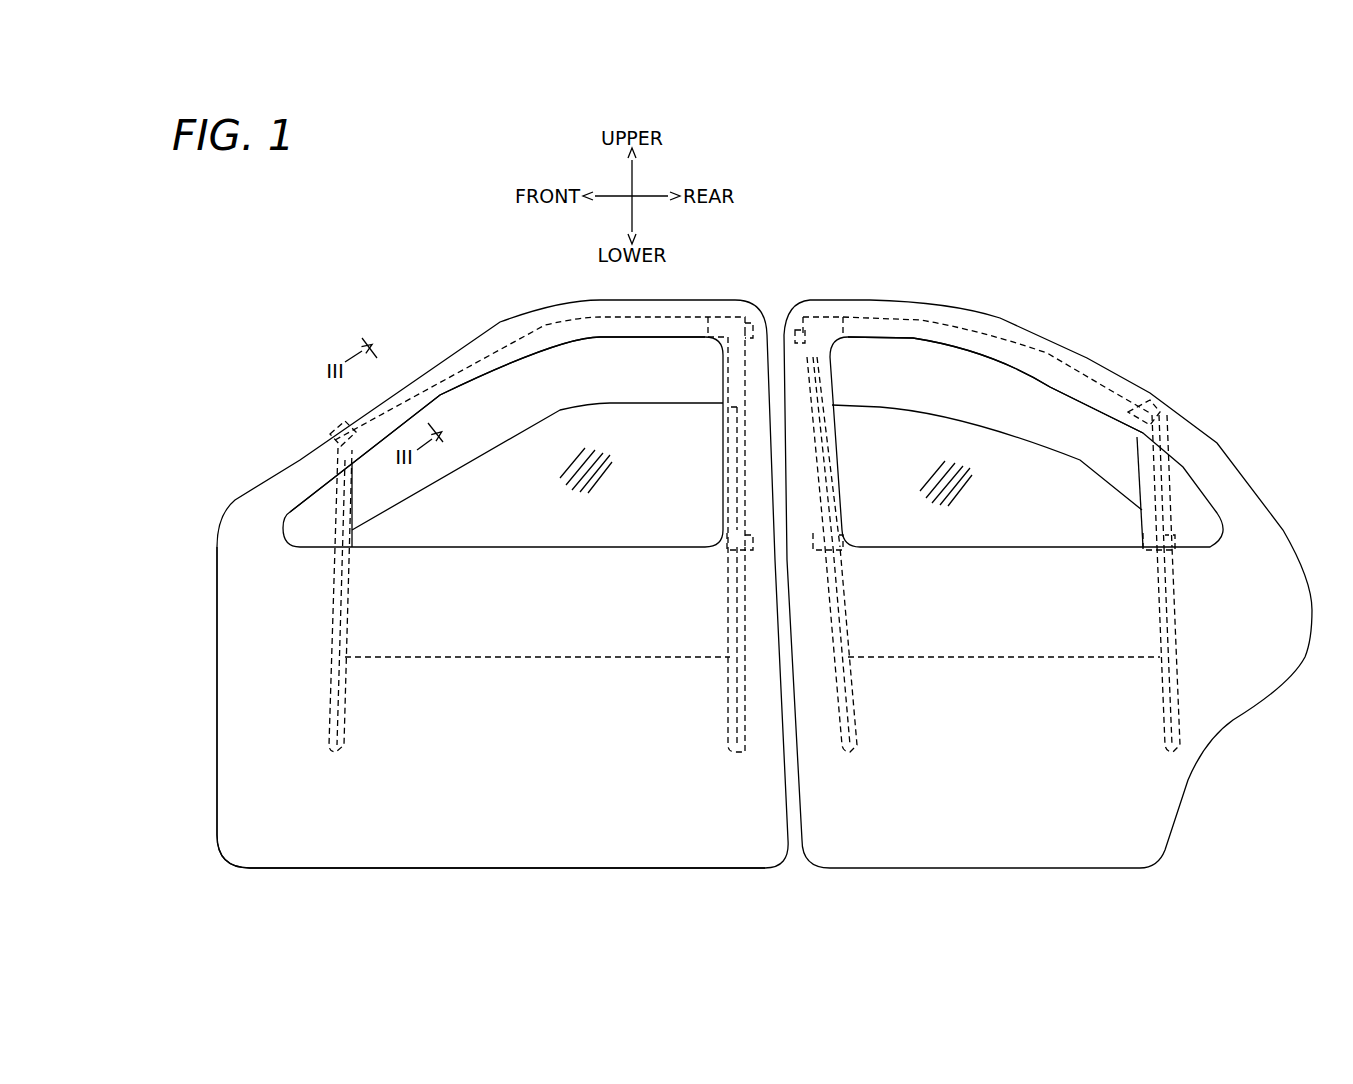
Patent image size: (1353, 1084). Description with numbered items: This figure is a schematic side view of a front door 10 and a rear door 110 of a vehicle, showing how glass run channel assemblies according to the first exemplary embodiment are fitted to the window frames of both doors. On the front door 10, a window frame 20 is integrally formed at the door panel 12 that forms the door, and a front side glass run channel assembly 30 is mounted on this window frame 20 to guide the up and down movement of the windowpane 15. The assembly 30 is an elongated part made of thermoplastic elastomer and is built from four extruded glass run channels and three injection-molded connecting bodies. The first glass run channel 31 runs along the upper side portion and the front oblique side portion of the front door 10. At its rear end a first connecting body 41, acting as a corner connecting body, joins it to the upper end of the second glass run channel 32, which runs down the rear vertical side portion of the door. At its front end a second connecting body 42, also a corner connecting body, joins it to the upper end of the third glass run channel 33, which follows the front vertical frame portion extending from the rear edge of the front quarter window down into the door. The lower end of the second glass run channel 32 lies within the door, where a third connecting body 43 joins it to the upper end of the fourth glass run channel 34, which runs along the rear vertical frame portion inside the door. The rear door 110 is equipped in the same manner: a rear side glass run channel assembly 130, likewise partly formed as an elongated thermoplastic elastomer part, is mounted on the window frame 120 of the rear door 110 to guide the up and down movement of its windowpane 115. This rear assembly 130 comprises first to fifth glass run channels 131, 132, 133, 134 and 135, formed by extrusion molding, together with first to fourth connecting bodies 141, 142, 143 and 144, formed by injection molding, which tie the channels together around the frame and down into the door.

The front door 10 is at (278, 444).
The door panel 12 is at (222, 597).
The windowpane 15 is at (614, 396).
The window frame 20 is at (536, 325).
The front side glass run channel assembly 30 is at (416, 362).
The first glass run channel 31 is at (482, 334).
The second glass run channel 32 is at (727, 474).
The third glass run channel 33 is at (324, 688).
The fourth glass run channel 34 is at (724, 697).
The first connecting body 41 is at (727, 312).
The second connecting body 42 is at (340, 442).
The third connecting body 43 is at (721, 543).
The rear door 110 is at (1220, 438).
The windowpane 115 is at (972, 410).
The window frame 120 is at (1077, 382).
The rear side glass run channel assembly 130 is at (1046, 330).
The first glass run channel 131 is at (922, 314).
The second glass run channel 132 is at (1168, 486).
The third glass run channel 133 is at (832, 381).
The fourth glass run channel 134 is at (1156, 703).
The fifth glass run channel 135 is at (863, 712).
The first connecting body 141 is at (1137, 412).
The second connecting body 142 is at (831, 325).
The third connecting body 143 is at (1143, 546).
The fourth connecting body 144 is at (845, 538).